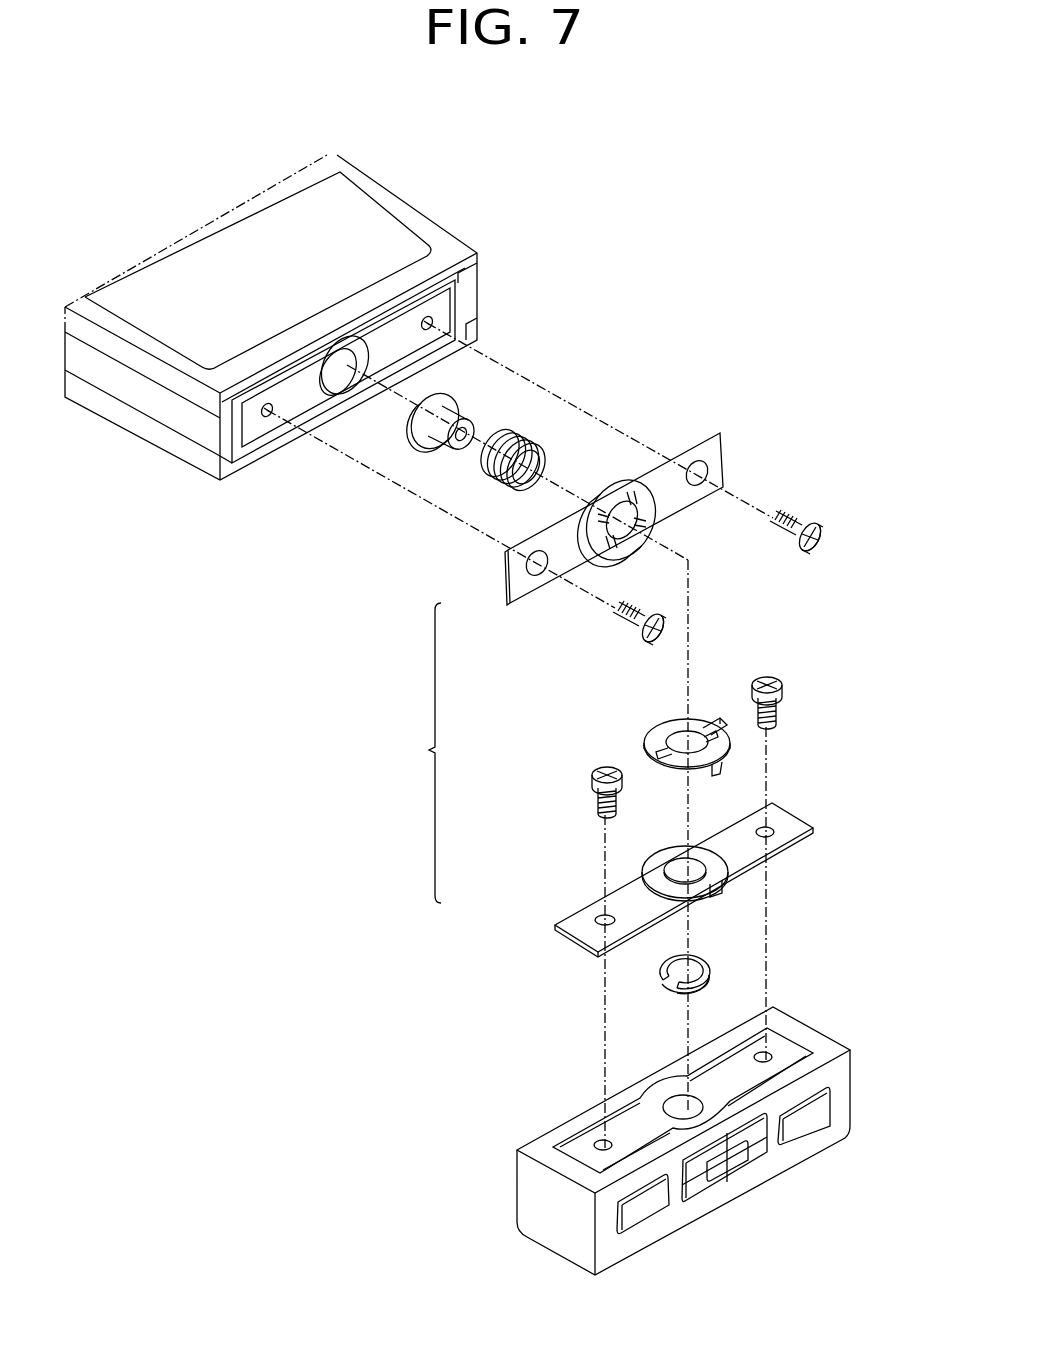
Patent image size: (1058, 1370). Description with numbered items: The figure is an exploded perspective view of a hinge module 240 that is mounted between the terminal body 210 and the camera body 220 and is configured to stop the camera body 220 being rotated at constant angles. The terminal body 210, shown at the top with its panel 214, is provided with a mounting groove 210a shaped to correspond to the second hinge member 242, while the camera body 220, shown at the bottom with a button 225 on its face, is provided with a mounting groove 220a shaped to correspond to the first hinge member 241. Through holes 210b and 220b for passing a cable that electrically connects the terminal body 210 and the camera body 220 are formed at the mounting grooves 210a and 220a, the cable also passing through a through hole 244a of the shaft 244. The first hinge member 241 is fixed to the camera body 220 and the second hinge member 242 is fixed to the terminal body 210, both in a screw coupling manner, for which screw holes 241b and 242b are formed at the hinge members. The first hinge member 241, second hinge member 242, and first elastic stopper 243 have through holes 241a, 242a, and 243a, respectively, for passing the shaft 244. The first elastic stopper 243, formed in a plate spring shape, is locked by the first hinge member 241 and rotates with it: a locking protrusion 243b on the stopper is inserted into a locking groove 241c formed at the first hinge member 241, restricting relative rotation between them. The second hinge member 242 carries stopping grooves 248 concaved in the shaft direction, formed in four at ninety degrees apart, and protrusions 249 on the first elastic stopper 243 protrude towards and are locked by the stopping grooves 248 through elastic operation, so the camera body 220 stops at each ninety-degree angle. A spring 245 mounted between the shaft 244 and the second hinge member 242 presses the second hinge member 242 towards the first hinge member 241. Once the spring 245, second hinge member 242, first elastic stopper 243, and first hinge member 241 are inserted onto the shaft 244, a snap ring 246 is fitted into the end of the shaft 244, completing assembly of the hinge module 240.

The terminal body 210 is at (462, 204).
The top panel of first body 214 is at (337, 208).
The mounting groove 210a is at (445, 311).
The through hole 210b is at (343, 387).
The shaft 244 is at (440, 436).
The through hole of the shaft 244a is at (460, 448).
The spring 245 is at (497, 486).
The second hinge member 242 is at (513, 584).
The through hole 242a is at (624, 521).
The screw hole 242b is at (707, 474).
The stopping groove 248 is at (614, 566).
The hinge module 240 is at (416, 753).
The first elastic stopper 243 is at (657, 742).
The through hole 243a is at (673, 733).
The locking protrusion 243b is at (718, 768).
The protrusion 249 is at (708, 720).
The first hinge member 241 is at (583, 917).
The through hole 241a is at (697, 868).
The screw hole 241b is at (767, 827).
The locking groove 241c is at (713, 895).
The snap ring 246 is at (663, 973).
The camera body 220 is at (714, 1234).
The mounting groove 220a is at (585, 1145).
The through hole 220b is at (677, 1108).
The button 225 is at (745, 1163).